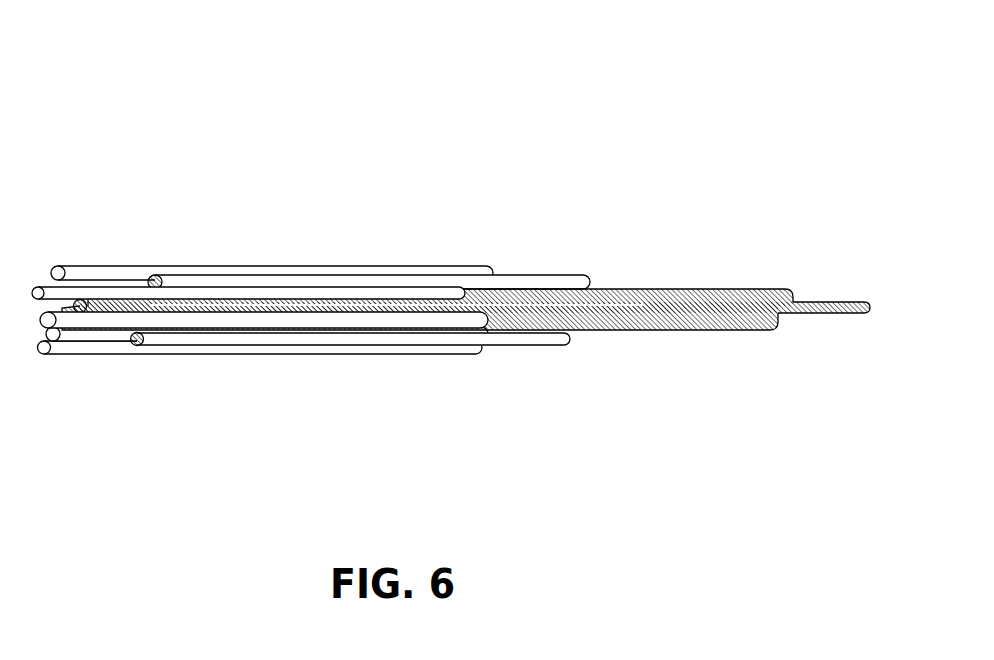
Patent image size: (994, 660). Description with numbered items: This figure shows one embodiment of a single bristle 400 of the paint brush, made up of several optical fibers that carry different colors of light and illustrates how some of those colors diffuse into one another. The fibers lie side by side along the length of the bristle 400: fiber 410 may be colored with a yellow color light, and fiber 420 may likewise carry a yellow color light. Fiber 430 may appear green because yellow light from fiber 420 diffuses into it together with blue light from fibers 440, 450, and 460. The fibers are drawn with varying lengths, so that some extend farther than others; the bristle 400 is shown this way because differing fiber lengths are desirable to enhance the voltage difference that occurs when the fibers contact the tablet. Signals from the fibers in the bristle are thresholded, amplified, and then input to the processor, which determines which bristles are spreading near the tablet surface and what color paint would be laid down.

The bristle 400 is at (474, 122).
The fiber 410 is at (494, 268).
The fiber 420 is at (557, 275).
The fiber 430 is at (643, 290).
The fiber 440 is at (816, 302).
The fiber 450 is at (722, 331).
The fiber 460 is at (545, 346).